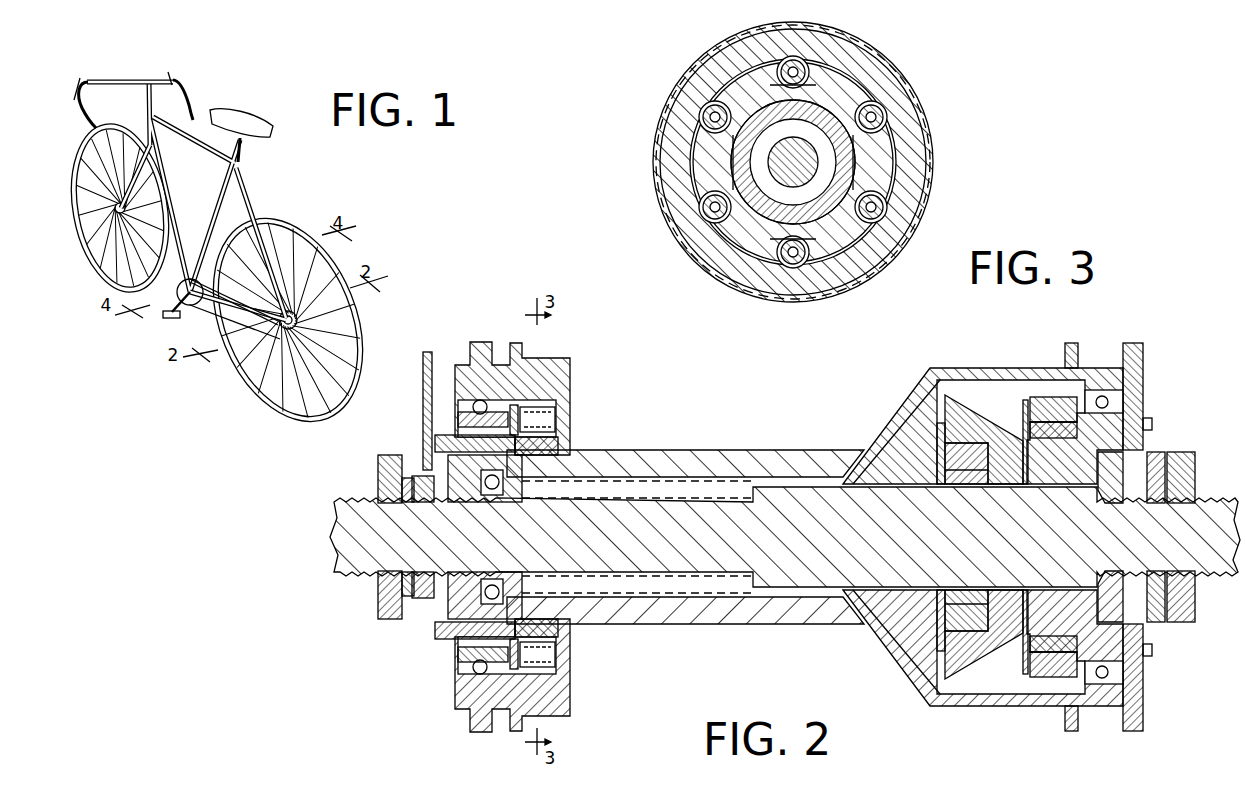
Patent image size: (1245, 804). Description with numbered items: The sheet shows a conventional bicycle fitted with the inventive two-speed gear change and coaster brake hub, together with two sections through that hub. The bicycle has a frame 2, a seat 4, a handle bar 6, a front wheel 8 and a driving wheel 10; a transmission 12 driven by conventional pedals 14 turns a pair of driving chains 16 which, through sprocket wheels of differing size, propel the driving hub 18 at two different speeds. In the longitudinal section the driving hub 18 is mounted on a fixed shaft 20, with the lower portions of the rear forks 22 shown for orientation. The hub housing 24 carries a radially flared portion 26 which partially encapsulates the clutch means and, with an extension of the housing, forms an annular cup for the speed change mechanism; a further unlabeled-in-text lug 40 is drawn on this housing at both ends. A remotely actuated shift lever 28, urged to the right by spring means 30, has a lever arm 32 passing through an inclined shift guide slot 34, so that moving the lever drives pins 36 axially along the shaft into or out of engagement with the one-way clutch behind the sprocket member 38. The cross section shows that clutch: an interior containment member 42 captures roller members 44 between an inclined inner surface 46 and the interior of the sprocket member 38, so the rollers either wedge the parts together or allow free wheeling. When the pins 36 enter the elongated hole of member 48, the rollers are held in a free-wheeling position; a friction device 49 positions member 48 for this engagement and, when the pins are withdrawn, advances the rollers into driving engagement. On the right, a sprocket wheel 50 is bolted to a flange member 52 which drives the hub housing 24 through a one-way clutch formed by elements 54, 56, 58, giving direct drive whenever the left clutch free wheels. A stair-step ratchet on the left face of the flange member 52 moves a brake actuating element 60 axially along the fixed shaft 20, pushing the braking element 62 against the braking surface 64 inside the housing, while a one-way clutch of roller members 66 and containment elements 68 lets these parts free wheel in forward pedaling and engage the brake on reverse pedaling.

In FIG. 1, the frame 2 is at (202, 153).
In FIG. 1, the seat 4 is at (257, 118).
In FIG. 1, the handle bar 6 is at (183, 80).
In FIG. 1, the front wheel 8 is at (72, 165).
In FIG. 1, the driving wheel 10 is at (355, 320).
In FIG. 1, the transmission 12 is at (192, 308).
In FIG. 1, the pedals 14 is at (165, 318).
In FIG. 1, the driving chains 16 is at (232, 330).
In FIG. 1, the driving hub 18 is at (298, 326).
In FIG. 2, the driving hub 18 is at (840, 390).
In FIG. 3, the fixed shaft 20 is at (775, 163).
In FIG. 2, the fixed shaft 20 is at (1217, 555).
In FIG. 1, the rear forks 22 is at (255, 190).
In FIG. 2, the rear forks 22 is at (378, 460).
In FIG. 3, the hub housing 24 is at (727, 237).
In FIG. 2, the hub housing 24 is at (740, 450).
In FIG. 3, the flared portion 26 is at (918, 100).
In FIG. 2, the flared portion 26 is at (570, 372).
In FIG. 2, the shift lever 28 is at (438, 348).
In FIG. 2, the spring means 30 is at (428, 598).
In FIG. 2, the lever arm 32 is at (423, 370).
In FIG. 2, the shift guide slot 34 is at (436, 455).
In FIG. 2, the pins 36 is at (450, 620).
In FIG. 3, the sprocket member 38 is at (887, 88).
In FIG. 2, the sprocket member 38 is at (482, 342).
In FIG. 2, the lug 40 is at (522, 350).
In FIG. 3, the interior containment member 42 is at (887, 163).
In FIG. 2, the interior containment member 42 is at (550, 445).
In FIG. 3, the roller members 44 is at (884, 209).
In FIG. 2, the roller members 44 is at (555, 418).
In FIG. 3, the inclined inner surface 46 is at (893, 233).
In FIG. 2, the member 48 is at (515, 418).
In FIG. 2, the friction device 49 is at (515, 412).
In FIG. 2, the sprocket wheel 50 is at (1143, 370).
In FIG. 2, the flange member 52 is at (1118, 418).
In FIG. 2, the one-way clutch element 54 is at (1035, 408).
In FIG. 2, the one-way clutch element 56 is at (1026, 402).
In FIG. 2, the one-way clutch element 58 is at (1082, 390).
In FIG. 2, the brake actuating element 60 is at (954, 658).
In FIG. 2, the braking element 62 is at (895, 642).
In FIG. 2, the braking surface 64 is at (908, 662).
In FIG. 2, the roller members 66 is at (940, 440).
In FIG. 2, the containment elements 68 is at (950, 470).